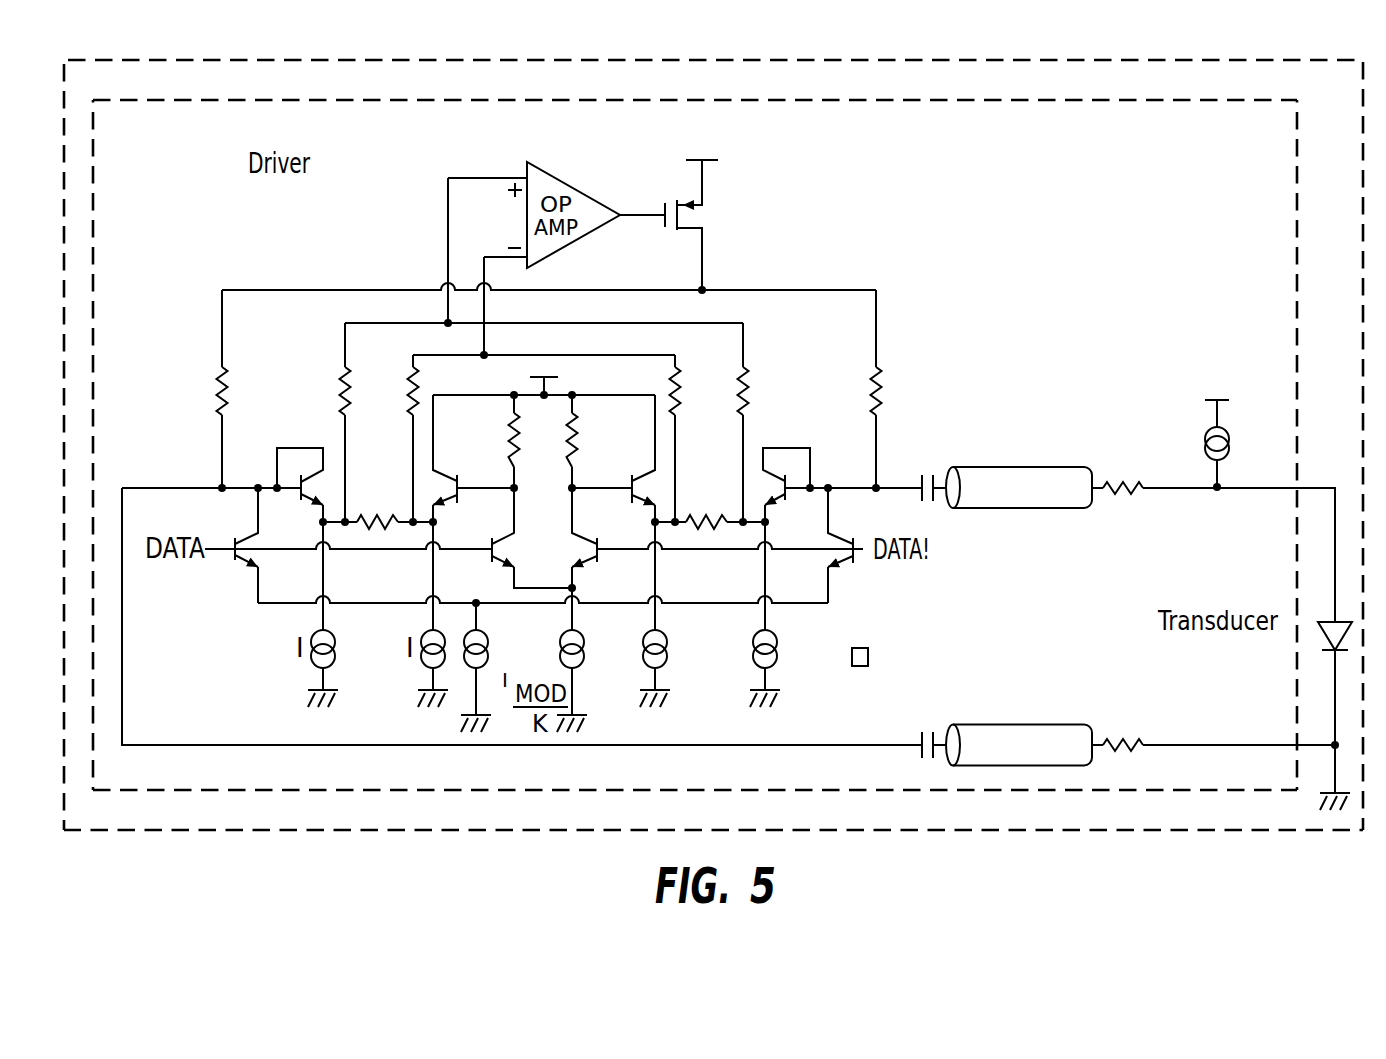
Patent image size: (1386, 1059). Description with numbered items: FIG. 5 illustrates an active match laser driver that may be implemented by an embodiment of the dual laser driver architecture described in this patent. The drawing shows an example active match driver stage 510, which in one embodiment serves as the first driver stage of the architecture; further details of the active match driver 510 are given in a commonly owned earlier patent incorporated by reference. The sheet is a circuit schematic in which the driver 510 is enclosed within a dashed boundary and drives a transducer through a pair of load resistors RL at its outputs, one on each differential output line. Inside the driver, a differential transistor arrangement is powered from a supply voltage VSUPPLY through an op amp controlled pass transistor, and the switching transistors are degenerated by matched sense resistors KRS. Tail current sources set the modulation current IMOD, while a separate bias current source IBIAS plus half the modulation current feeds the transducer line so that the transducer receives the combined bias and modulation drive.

The active match driver 510 is at (300, 211).
The load resistor RL is at (1160, 598).
The sense resistor KRS is at (544, 441).
The modulation current source IMOD is at (504, 667).
The bias current source IBIAS is at (1229, 449).
The supply voltage transistor VSUPPLY is at (682, 204).